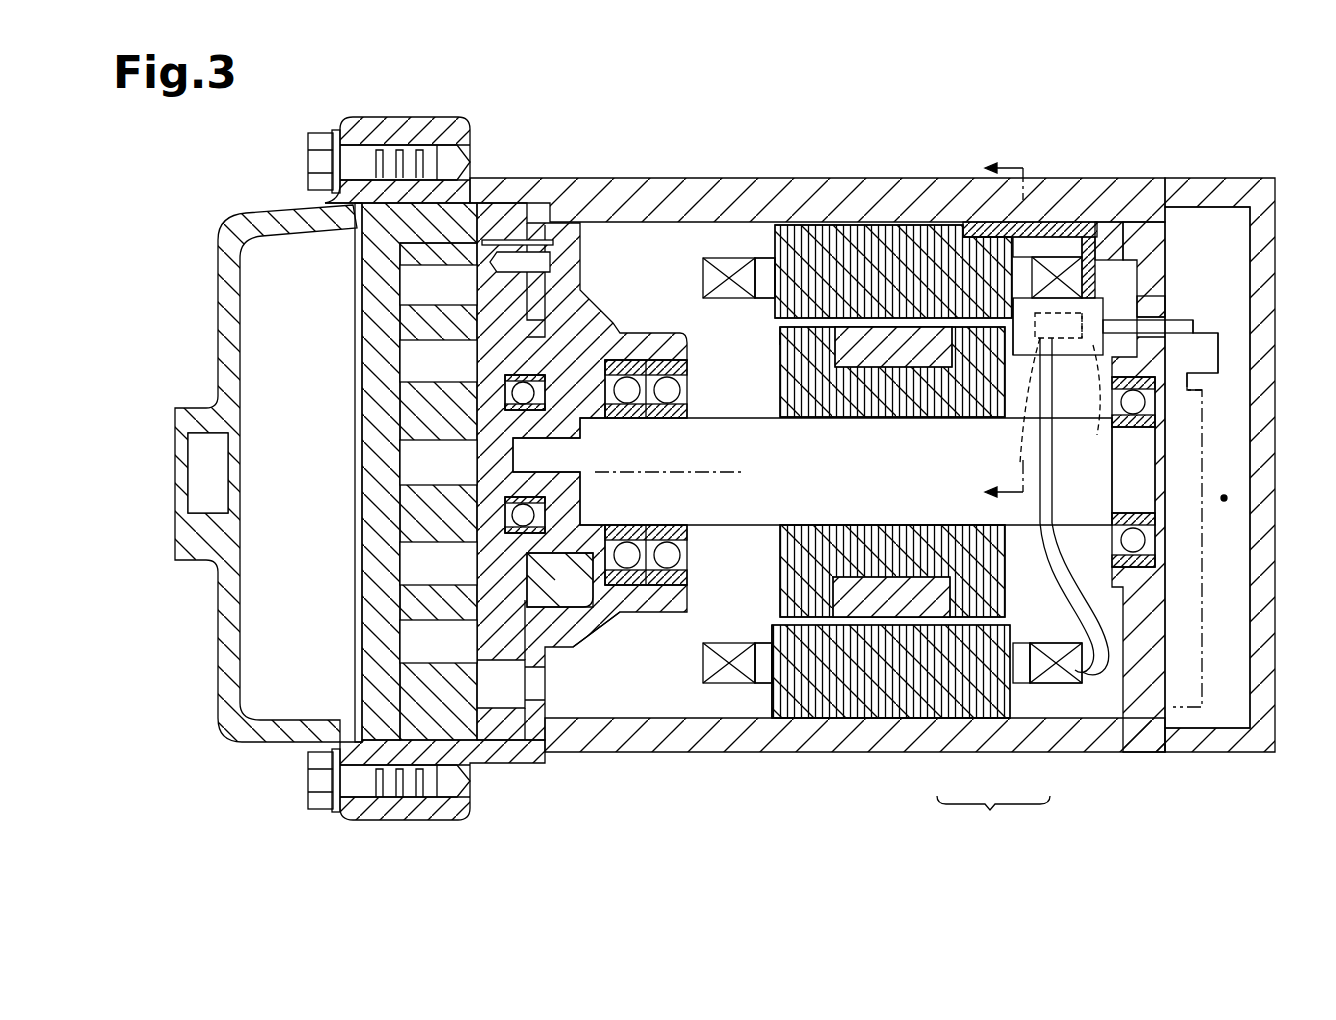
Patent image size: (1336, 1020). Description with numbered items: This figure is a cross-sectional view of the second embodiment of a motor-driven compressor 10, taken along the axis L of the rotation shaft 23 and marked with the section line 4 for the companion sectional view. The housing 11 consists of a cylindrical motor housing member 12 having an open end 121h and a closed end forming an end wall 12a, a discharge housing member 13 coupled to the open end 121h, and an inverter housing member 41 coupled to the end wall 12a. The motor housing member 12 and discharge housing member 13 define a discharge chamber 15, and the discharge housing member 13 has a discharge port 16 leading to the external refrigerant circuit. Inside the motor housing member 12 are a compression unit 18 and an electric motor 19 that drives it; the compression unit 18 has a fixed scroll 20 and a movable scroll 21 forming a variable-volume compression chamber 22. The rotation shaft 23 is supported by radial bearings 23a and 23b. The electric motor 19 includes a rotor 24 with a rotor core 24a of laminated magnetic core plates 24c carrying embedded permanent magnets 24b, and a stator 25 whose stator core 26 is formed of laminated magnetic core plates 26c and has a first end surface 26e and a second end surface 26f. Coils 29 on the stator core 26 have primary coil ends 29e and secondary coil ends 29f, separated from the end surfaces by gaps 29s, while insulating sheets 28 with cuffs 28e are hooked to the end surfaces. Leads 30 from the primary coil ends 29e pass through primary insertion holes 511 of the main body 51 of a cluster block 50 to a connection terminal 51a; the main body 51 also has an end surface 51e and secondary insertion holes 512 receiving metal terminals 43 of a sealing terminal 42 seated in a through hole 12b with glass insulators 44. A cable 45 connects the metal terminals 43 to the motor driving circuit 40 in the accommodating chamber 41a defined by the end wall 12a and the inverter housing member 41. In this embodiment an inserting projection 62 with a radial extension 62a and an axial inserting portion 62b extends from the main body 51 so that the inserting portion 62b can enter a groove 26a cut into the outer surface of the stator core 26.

The motor-driven compressor 10 is at (1249, 138).
The housing 11 is at (584, 178).
The motor housing member 12 is at (668, 178).
The end wall 12a is at (1150, 620).
The through hole 12b is at (1162, 299).
The discharge housing member 13 is at (226, 212).
The discharge chamber 15 is at (312, 413).
The discharge port 16 is at (195, 509).
The compression unit 18 is at (612, 628).
The electric motor 19 is at (838, 720).
The fixed scroll 20 is at (365, 665).
The movable scroll 21 is at (515, 597).
The compression chamber 22 is at (452, 300).
The rotation shaft 23 is at (714, 423).
The radial bearing 23a is at (667, 376).
The radial bearing 23b is at (1112, 560).
The rotor 24 is at (835, 430).
The rotor core 24a is at (856, 530).
The permanent magnets 24b is at (855, 360).
The magnetic core plates 24c is at (911, 413).
The stator 25 is at (993, 814).
The stator core 26 is at (958, 718).
The groove 26a is at (976, 236).
The magnetic core plates 26c is at (887, 718).
The first end surface 26e is at (1014, 645).
The second end surface 26f is at (772, 630).
The insulating sheet 28 is at (765, 262).
The cuff 28e is at (765, 470).
The coils 29 is at (1052, 726).
The primary coil end 29e is at (1064, 268).
The secondary coil end 29f is at (703, 278).
The gaps 29s is at (760, 300).
The leads 30 is at (1058, 570).
The motor driving circuit 40 is at (1204, 421).
The inverter housing member 41 is at (1276, 528).
The accommodating chamber 41a is at (1226, 498).
The sealing terminal 42 is at (1172, 277).
The metal terminal 43 is at (1193, 323).
The glass insulator 44 is at (1167, 352).
The cable 45 is at (1218, 343).
The cluster block 50 is at (1118, 298).
The main body 51 is at (1062, 352).
The connection terminal 51a is at (1093, 352).
The end surface 51e is at (1003, 340).
The primary insertion holes 511 is at (1017, 400).
The secondary insertion holes 512 is at (1082, 403).
The inserting projection 62 is at (1090, 244).
The extension 62a is at (1103, 262).
The inserting portion 62b is at (1031, 237).
The open end 121h is at (357, 232).
The section line IV-IV 4 is at (995, 329).
The axis L is at (636, 474).